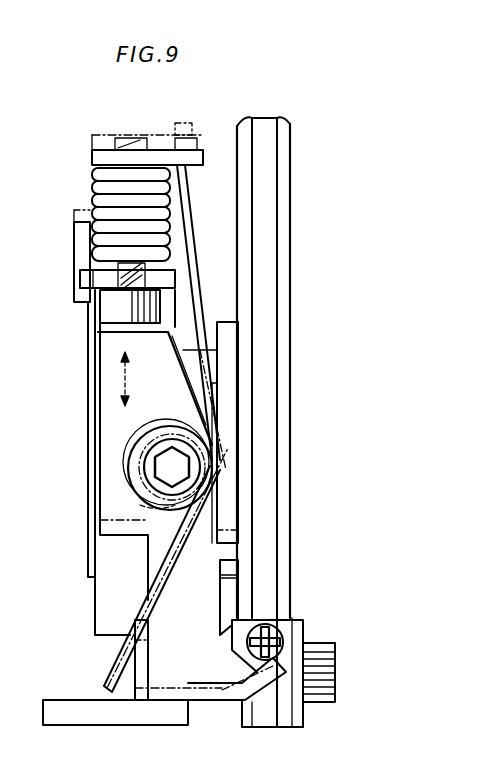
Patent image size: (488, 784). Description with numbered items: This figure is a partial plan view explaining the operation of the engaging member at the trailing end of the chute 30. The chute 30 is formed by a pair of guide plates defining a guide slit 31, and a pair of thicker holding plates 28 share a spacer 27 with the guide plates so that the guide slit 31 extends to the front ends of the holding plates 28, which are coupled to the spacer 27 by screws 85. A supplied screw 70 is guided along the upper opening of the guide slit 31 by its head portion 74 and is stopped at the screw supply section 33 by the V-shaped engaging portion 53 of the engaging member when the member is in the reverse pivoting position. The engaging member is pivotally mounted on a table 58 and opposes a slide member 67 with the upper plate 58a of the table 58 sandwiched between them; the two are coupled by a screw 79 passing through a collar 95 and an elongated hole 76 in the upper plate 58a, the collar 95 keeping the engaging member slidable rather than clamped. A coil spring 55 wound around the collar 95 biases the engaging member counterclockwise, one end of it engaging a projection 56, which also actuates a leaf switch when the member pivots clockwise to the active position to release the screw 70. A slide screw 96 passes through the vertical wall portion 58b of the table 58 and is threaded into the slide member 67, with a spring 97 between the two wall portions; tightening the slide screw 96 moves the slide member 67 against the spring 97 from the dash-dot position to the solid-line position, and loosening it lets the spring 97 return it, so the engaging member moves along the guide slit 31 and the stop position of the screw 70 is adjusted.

The chute 30 is at (246, 170).
The guide slit 31 is at (264, 292).
The coil spring 55 is at (188, 216).
The spring 97 is at (92, 190).
The slide member 67 is at (90, 248).
The vertical wall portion 58b is at (118, 283).
The slide screw 96 is at (128, 311).
The upper plate 58a is at (100, 598).
The table 58 is at (228, 338).
The collar 95 is at (130, 434).
The screw 79 is at (195, 468).
The elongated hole 76 is at (160, 502).
The projection 56 is at (140, 667).
The holding plates 28 is at (245, 718).
The engaging portion 53 is at (170, 690).
The screw supply section 33 is at (262, 595).
The spacer 27 is at (270, 600).
The screw 70 is at (280, 632).
The head portion 74 is at (300, 645).
The screws 85 is at (323, 661).